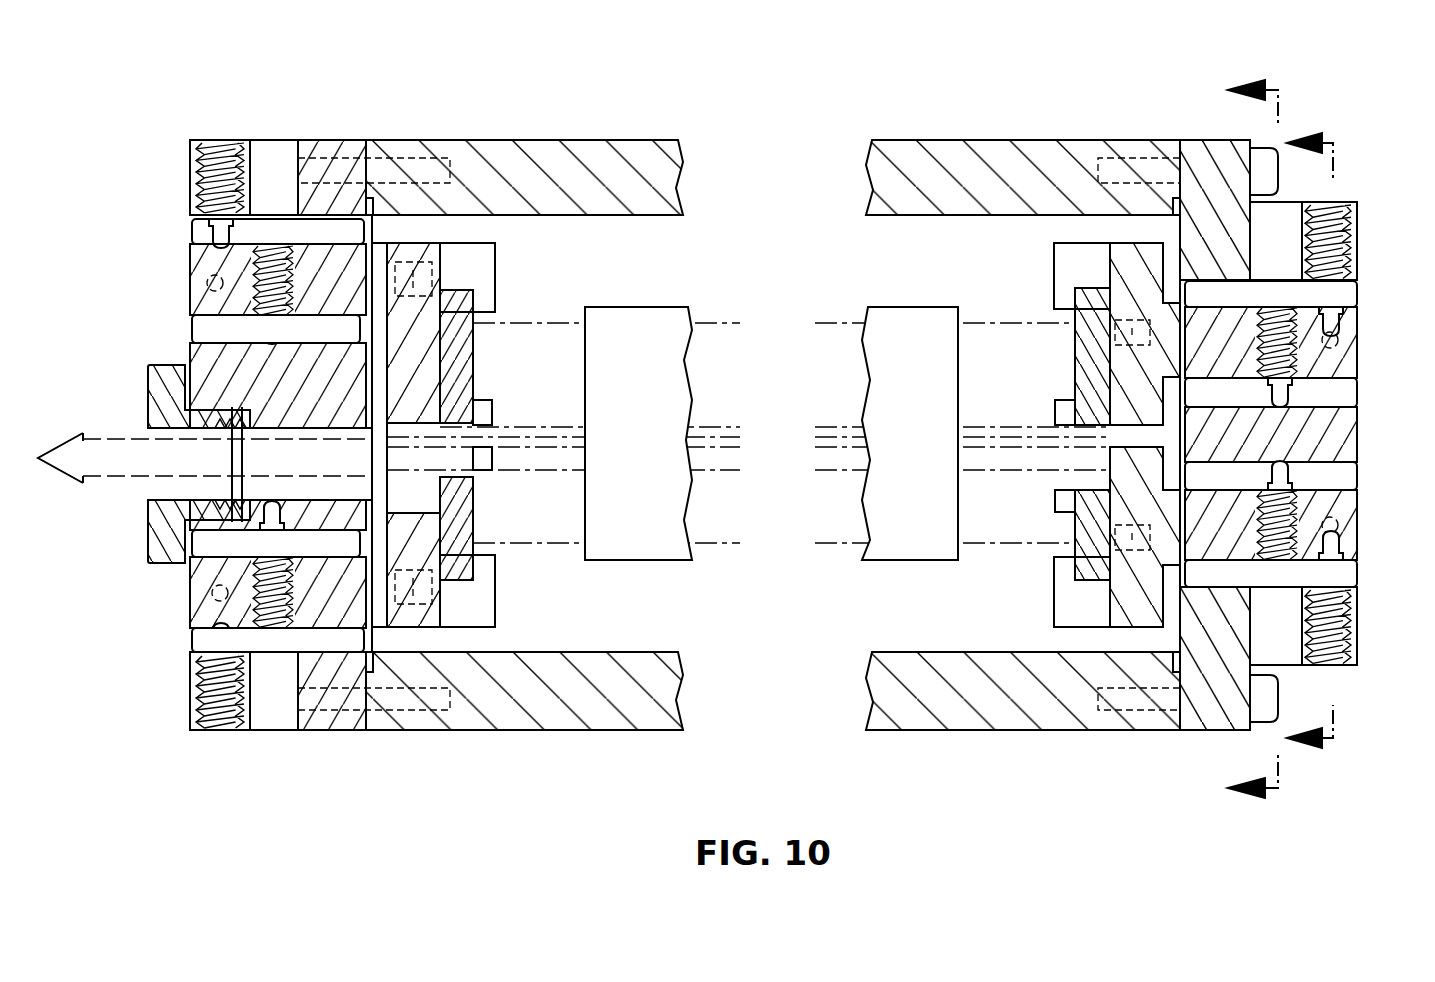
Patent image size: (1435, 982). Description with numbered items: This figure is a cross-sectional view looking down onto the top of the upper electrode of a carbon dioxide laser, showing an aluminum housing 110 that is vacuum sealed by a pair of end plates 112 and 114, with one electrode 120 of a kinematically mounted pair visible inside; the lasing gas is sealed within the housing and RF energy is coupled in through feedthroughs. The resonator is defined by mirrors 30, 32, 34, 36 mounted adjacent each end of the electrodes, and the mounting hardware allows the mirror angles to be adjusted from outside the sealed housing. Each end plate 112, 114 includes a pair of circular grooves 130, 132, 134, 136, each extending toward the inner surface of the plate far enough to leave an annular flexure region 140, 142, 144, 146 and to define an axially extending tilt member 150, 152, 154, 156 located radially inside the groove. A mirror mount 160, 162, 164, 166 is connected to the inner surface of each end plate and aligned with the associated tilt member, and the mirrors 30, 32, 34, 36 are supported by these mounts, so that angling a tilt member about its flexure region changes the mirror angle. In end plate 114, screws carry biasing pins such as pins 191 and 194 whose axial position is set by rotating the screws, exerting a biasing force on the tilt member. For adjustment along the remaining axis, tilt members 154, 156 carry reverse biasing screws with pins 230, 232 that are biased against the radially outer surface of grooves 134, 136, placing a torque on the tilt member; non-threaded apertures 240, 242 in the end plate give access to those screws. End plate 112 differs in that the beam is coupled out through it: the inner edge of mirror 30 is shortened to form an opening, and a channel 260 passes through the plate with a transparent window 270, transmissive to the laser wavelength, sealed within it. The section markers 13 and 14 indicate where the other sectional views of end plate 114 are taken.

The mirror 30 is at (473, 505).
The mirror 32 is at (1076, 505).
The mirror 34 is at (473, 355).
The mirror 36 is at (1076, 383).
The aluminum housing 110 is at (595, 152).
The end plate 112 is at (322, 142).
The end plate 114 is at (1203, 145).
The electrode 120 is at (635, 318).
The circular groove 130 is at (195, 320).
The circular groove 132 is at (192, 638).
The circular groove 134 is at (1295, 396).
The circular groove 136 is at (1357, 468).
The annular flexure region 140 is at (368, 228).
The annular flexure region 142 is at (372, 633).
The annular flexure region 144 is at (1170, 300).
The annular flexure region 146 is at (1172, 585).
The tilt member 150 is at (196, 266).
The tilt member 152 is at (192, 593).
The tilt member 154 is at (1357, 336).
The tilt member 156 is at (1357, 541).
The mirror mount 160 is at (443, 253).
The mirror mount 162 is at (432, 622).
The mirror mount 164 is at (1108, 255).
The mirror mount 166 is at (1108, 612).
The biasing pin 191 is at (1340, 312).
The biasing pin 194 is at (1330, 565).
The pin 230 is at (1292, 402).
The pin 232 is at (1292, 480).
The non-threaded aperture 240 is at (1300, 212).
The non-threaded aperture 242 is at (1302, 657).
The channel 260 is at (160, 488).
The transparent window 270 is at (237, 462).
The section line 13- 13 is at (1254, 436).
The section line 14- 14 is at (1314, 440).